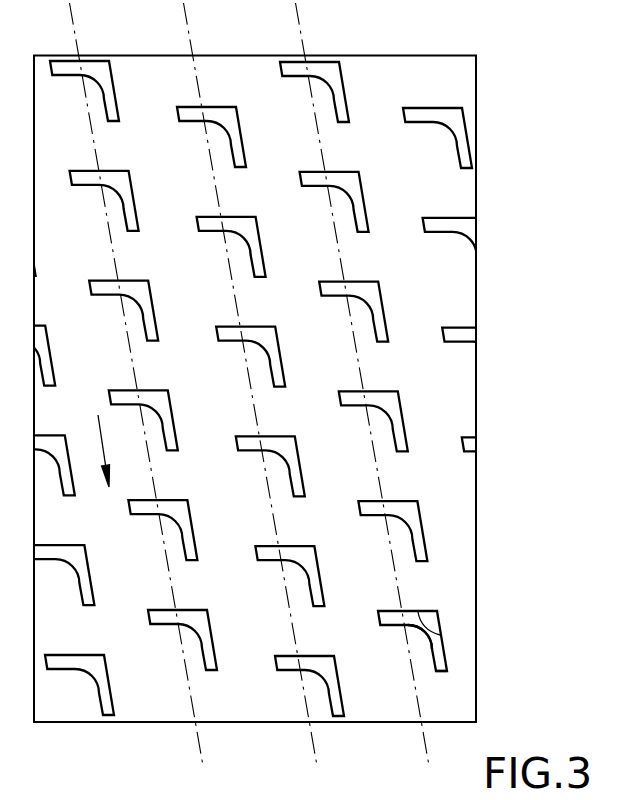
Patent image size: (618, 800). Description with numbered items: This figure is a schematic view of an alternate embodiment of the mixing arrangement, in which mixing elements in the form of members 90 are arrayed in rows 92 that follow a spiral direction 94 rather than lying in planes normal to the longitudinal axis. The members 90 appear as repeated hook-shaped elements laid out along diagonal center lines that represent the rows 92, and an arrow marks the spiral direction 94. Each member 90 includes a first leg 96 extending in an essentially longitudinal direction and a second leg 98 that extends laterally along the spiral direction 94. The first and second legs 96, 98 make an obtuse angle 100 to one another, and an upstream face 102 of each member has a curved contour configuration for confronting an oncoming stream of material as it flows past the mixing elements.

The member 90 is at (356, 78).
The row 92 is at (131, 369).
The spiral direction 94 is at (100, 427).
The first leg 96 is at (390, 611).
The second leg 98 is at (446, 665).
The obtuse angle 100 is at (441, 637).
The upstream face 102 is at (420, 633).